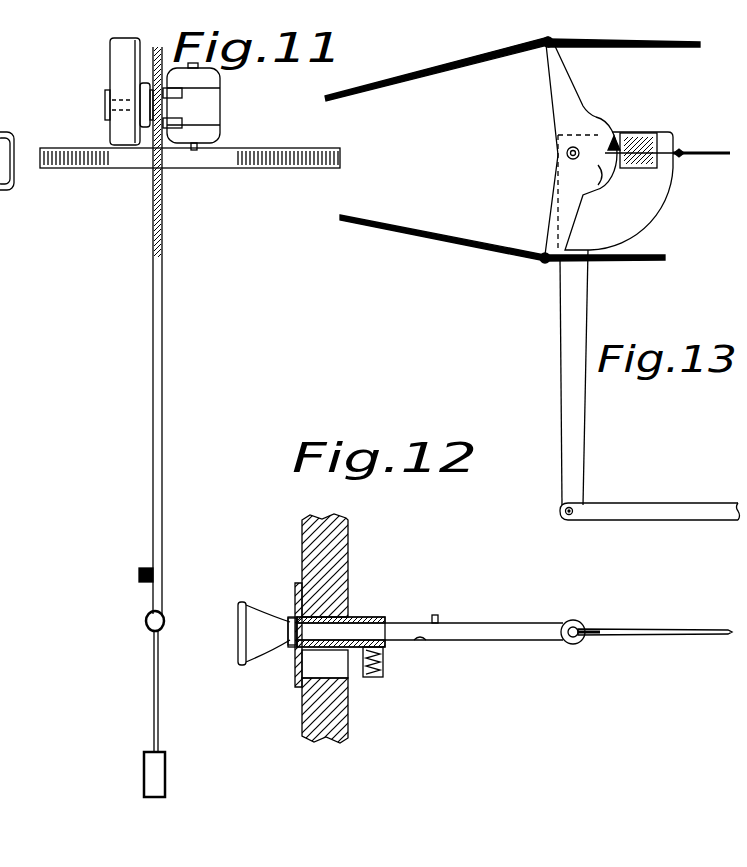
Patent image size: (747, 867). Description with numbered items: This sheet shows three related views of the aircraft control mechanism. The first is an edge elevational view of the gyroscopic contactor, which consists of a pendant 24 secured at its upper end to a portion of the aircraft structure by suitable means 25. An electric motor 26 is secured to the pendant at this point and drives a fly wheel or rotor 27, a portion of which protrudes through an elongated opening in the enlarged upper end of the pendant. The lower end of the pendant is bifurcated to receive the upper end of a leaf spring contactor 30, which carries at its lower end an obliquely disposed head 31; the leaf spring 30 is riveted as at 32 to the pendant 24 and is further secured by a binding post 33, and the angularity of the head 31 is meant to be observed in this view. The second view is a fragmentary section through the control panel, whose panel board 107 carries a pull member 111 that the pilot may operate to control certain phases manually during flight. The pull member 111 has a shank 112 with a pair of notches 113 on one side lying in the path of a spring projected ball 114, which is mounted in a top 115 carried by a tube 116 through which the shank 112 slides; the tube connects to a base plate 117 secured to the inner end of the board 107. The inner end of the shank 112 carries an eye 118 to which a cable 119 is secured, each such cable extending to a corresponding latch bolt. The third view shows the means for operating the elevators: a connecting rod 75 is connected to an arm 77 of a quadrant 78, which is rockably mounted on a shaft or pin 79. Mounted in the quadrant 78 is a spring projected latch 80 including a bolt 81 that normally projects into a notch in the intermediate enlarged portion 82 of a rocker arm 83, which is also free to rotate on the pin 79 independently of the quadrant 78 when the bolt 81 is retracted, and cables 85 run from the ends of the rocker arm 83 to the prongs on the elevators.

In FIG. 11, the pendant 24 is at (155, 365).
In FIG. 11, the securing means 25 is at (105, 100).
In FIG. 11, the electric motor 26 is at (213, 108).
In FIG. 11, the fly wheel or rotor 27 is at (240, 150).
In FIG. 11, the leaf spring contactor 30 is at (153, 686).
In FIG. 11, the obliquely disposed head 31 is at (145, 762).
In FIG. 11, the rivet 32 is at (146, 622).
In FIG. 11, the binding post 33 is at (139, 575).
In FIG. 13, the connecting rod 75 is at (673, 497).
In FIG. 13, the arm 77 is at (575, 452).
In FIG. 13, the quadrant 78 is at (650, 211).
In FIG. 13, the shaft or pin 79 is at (562, 158).
In FIG. 13, the spring projected latch 80 is at (640, 138).
In FIG. 13, the bolt 81 is at (612, 138).
In FIG. 13, the intermediate enlarged portion 82 is at (598, 172).
In FIG. 13, the rocker arm 83 is at (555, 95).
In FIG. 13, the cables 85 is at (408, 82).
In FIG. 12, the panel board 107 is at (335, 555).
In FIG. 12, the pull member 111 is at (250, 620).
In FIG. 12, the shank 112 is at (462, 630).
In FIG. 12, the notches 113 is at (420, 641).
In FIG. 12, the spring projected ball 114 is at (419, 604).
In FIG. 12, the top 115 is at (375, 678).
In FIG. 12, the tube 116 is at (362, 618).
In FIG. 12, the base plate 117 is at (298, 585).
In FIG. 12, the eye 118 is at (582, 645).
In FIG. 12, the cable 119 is at (645, 628).